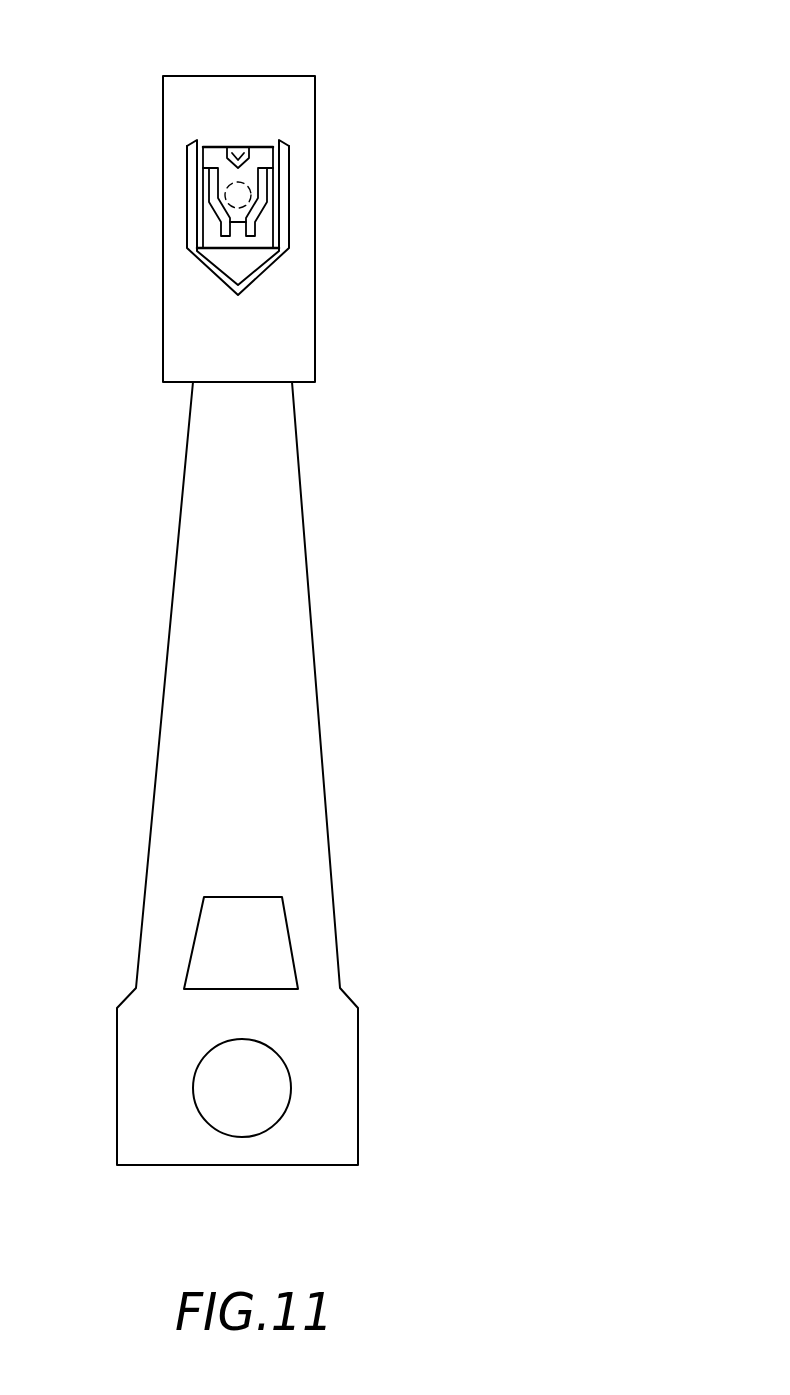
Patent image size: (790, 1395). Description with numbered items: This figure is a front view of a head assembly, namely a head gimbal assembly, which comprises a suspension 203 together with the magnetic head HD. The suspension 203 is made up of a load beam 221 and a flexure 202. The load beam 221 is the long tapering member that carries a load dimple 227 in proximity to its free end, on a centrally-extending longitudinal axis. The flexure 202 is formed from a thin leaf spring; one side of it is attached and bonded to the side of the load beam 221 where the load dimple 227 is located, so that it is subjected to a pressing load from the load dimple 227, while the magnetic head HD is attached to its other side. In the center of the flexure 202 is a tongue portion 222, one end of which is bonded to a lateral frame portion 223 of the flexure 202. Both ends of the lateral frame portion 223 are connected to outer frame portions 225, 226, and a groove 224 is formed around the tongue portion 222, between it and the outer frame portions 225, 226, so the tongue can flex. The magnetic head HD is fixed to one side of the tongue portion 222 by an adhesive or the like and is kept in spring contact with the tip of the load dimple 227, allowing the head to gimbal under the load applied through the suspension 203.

The flexure 202 is at (333, 363).
The suspension 203 is at (328, 619).
The load beam 221 is at (285, 768).
The tongue portion 222 is at (235, 260).
The lateral frame portion 223 is at (248, 99).
The groove 224 is at (253, 273).
The outer frame portion 225 is at (178, 219).
The outer frame portion 226 is at (303, 239).
The load dimple 227 is at (246, 183).
The magnetic head HD is at (210, 159).